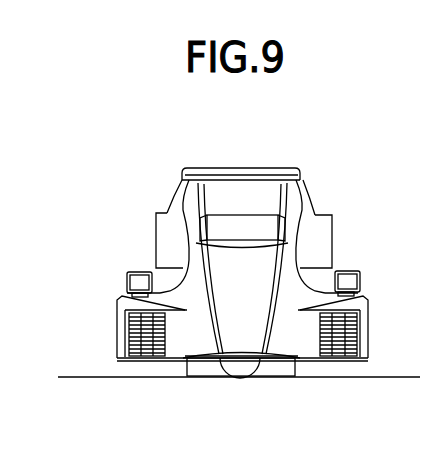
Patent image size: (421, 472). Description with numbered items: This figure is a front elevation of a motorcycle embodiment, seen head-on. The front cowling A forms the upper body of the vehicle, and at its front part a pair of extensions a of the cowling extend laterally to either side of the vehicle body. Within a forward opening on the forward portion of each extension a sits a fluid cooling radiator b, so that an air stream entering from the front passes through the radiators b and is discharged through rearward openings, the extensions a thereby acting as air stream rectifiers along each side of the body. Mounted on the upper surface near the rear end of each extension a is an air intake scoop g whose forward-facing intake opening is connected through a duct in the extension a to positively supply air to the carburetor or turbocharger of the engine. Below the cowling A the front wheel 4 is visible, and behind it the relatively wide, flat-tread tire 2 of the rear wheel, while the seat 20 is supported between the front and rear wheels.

The seat 20 is at (242, 166).
The front cowling A is at (338, 240).
The extensions of the cowling a is at (113, 302).
The air intake scoop g is at (138, 268).
The fluid cooling radiators b is at (161, 362).
The tire 2 is at (264, 368).
The front wheel 4 is at (232, 366).